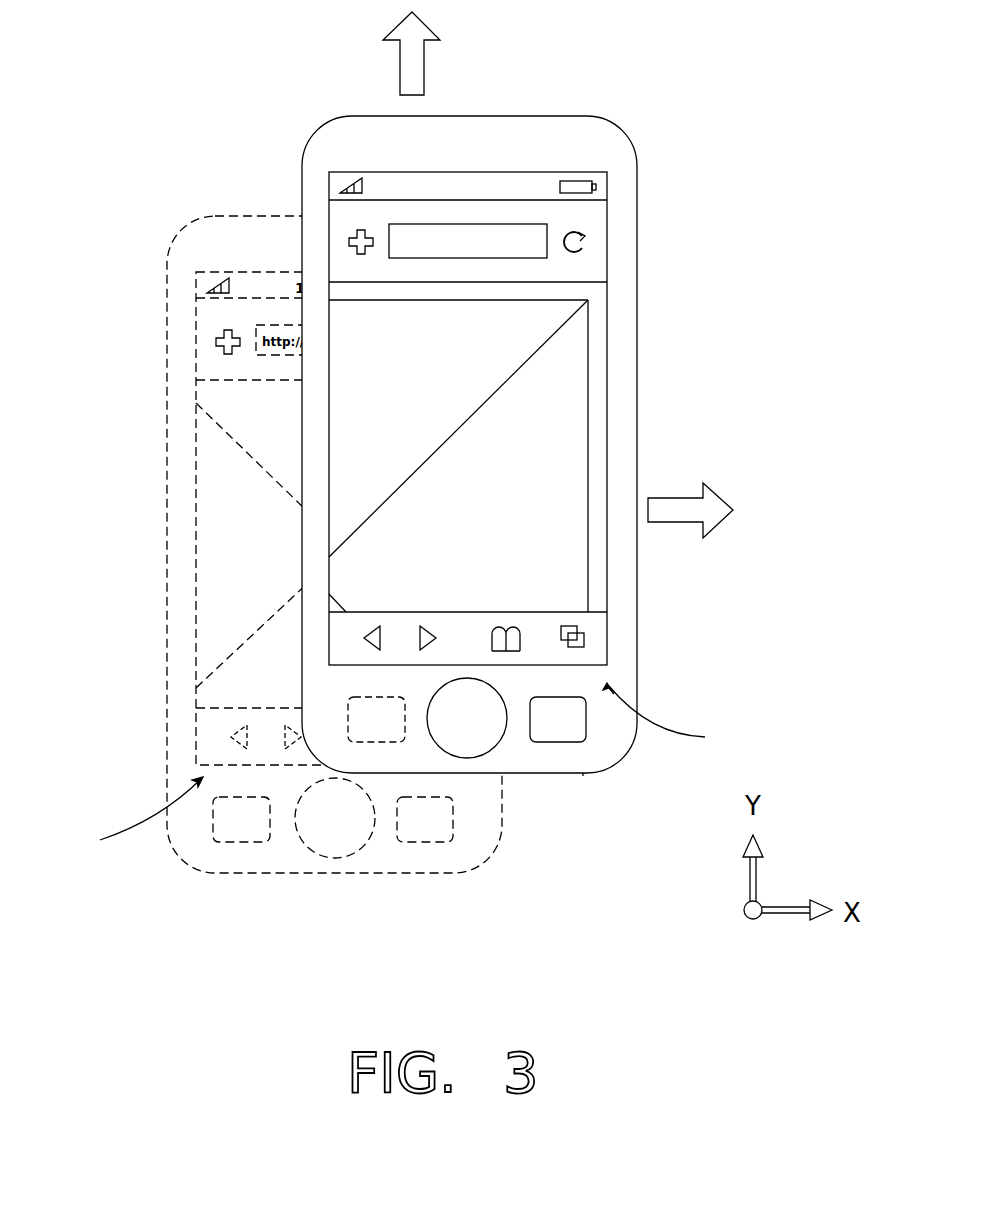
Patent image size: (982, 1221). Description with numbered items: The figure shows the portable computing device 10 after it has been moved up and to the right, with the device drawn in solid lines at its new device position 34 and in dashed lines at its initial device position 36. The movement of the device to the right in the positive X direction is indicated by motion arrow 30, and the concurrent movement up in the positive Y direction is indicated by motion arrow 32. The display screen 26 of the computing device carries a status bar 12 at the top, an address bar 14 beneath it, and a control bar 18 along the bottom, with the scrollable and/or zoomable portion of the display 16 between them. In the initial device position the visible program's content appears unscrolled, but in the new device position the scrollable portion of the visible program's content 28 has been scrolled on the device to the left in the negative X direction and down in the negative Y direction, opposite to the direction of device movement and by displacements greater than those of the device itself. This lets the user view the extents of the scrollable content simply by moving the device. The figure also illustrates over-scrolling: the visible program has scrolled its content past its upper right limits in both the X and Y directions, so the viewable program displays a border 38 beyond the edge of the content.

The computing device 10 is at (350, 138).
The status bar 12 is at (337, 180).
The address bar 14 is at (342, 217).
The scrollable and/or zoomable portion of the display 16 is at (210, 475).
The control bar 18 is at (597, 650).
The display screen 26 is at (403, 771).
The visible program's content 28 is at (573, 397).
The motion arrow 30 is at (672, 508).
The motion arrow 32 is at (412, 72).
The new device position 34 is at (583, 782).
The initial device position 36 is at (460, 890).
The border 38 is at (600, 295).